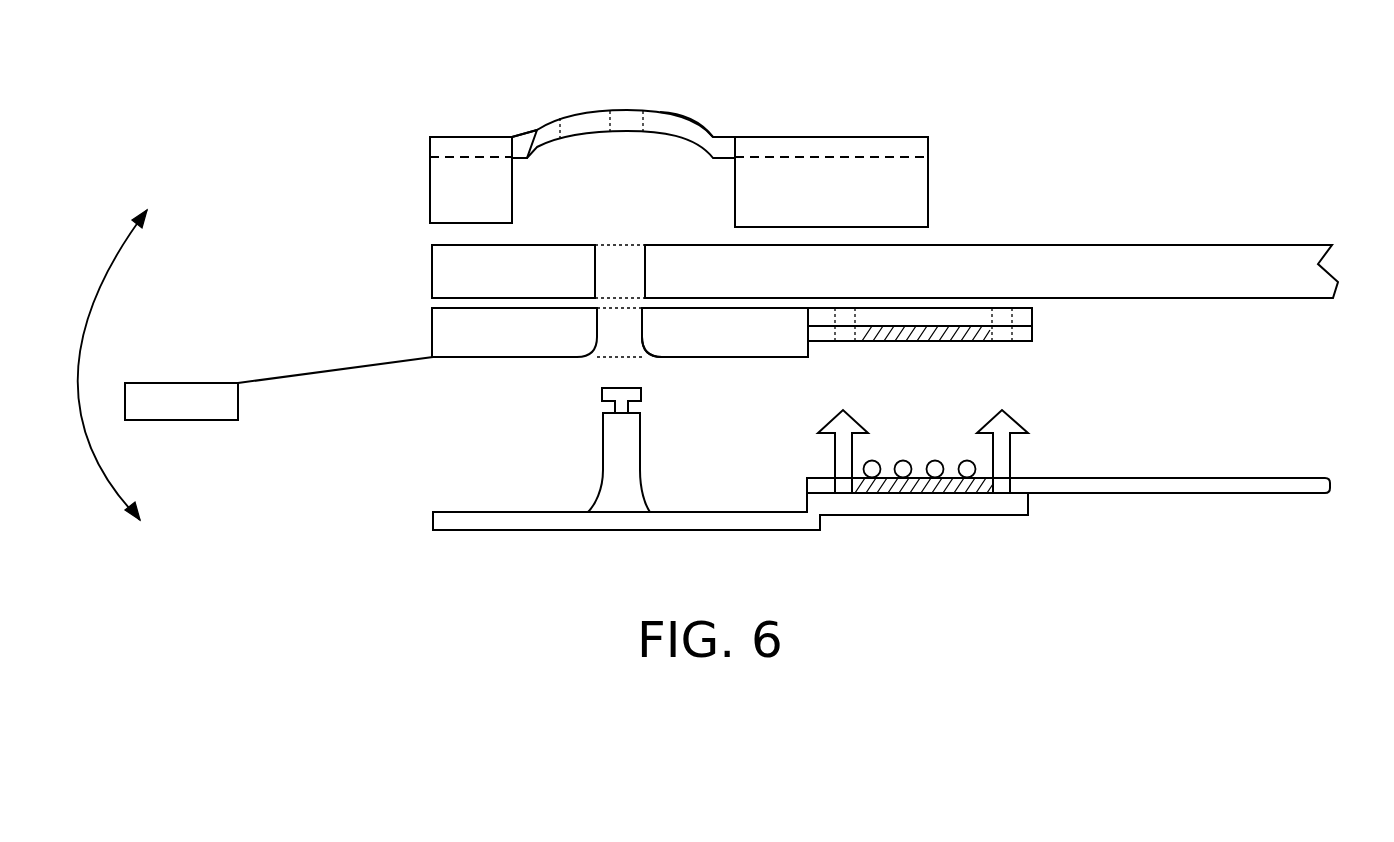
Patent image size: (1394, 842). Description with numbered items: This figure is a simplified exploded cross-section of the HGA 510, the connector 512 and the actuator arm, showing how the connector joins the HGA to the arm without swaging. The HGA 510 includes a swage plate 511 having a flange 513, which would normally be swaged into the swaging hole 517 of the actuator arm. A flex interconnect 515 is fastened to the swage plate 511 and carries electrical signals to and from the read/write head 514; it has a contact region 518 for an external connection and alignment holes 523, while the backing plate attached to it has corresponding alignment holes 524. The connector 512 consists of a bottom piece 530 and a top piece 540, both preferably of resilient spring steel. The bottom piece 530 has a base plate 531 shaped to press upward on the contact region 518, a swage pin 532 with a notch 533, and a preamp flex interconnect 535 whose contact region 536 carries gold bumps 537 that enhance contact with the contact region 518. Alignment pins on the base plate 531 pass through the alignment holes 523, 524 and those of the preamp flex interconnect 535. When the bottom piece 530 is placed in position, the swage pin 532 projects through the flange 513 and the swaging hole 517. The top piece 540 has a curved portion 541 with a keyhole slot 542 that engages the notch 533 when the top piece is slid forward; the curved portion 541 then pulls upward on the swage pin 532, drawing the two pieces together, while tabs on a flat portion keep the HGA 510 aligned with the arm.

The HGA 510 is at (252, 330).
The swage plate 511 is at (432, 335).
The connector 512 is at (100, 365).
The flange 513 is at (647, 353).
The read/write head 514 is at (185, 382).
The flex interconnect 515 is at (1035, 335).
The swaging hole 517 is at (597, 282).
The contact region 518 is at (897, 342).
The alignment holes 523 is at (1003, 342).
The alignment holes 524 is at (1002, 308).
The bottom piece 530 is at (303, 522).
The base plate 531 is at (433, 517).
The swage pin 532 is at (602, 433).
The notch 533 is at (606, 400).
The preamp flex interconnect 535 is at (1273, 476).
The contact region 536 is at (922, 470).
The gold bumps 537 is at (903, 459).
The top piece 540 is at (343, 157).
The curved portion 541 is at (690, 97).
The keyhole slot 542 is at (592, 112).